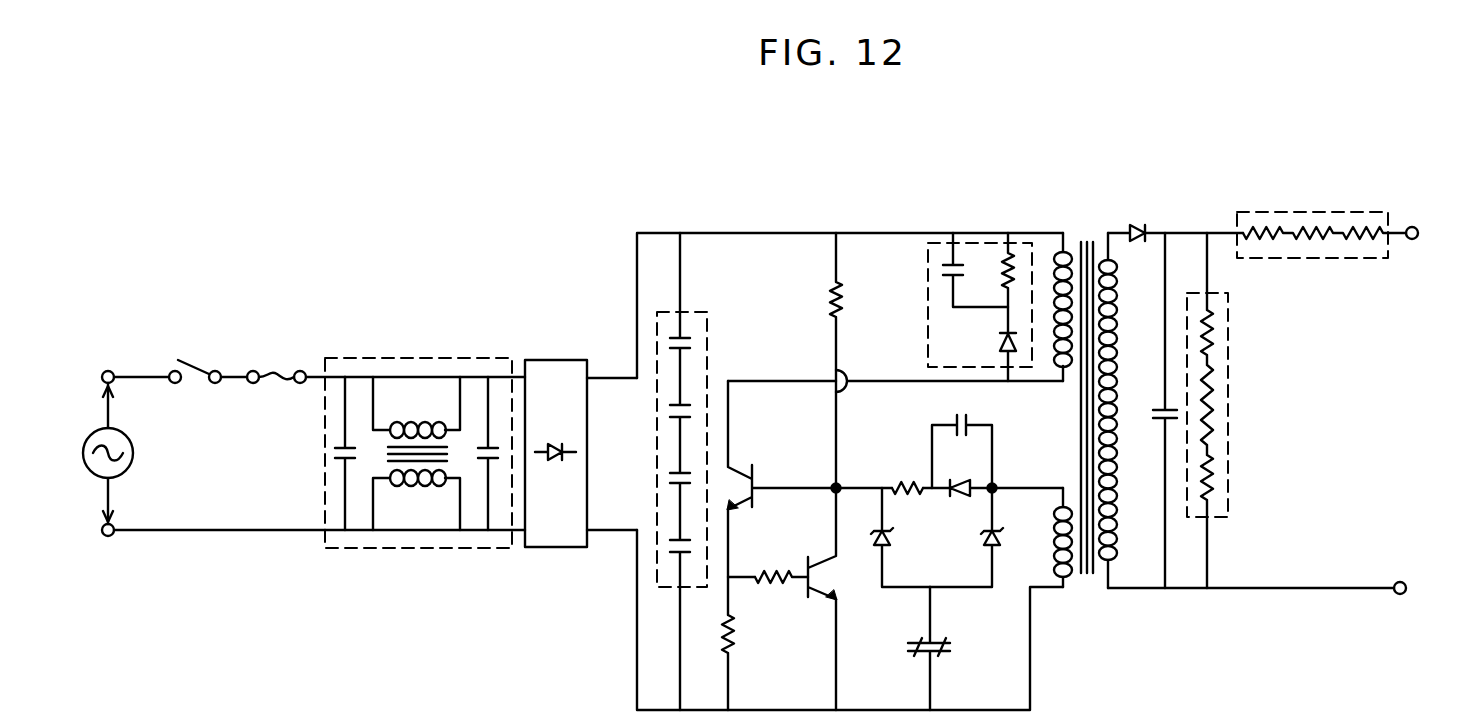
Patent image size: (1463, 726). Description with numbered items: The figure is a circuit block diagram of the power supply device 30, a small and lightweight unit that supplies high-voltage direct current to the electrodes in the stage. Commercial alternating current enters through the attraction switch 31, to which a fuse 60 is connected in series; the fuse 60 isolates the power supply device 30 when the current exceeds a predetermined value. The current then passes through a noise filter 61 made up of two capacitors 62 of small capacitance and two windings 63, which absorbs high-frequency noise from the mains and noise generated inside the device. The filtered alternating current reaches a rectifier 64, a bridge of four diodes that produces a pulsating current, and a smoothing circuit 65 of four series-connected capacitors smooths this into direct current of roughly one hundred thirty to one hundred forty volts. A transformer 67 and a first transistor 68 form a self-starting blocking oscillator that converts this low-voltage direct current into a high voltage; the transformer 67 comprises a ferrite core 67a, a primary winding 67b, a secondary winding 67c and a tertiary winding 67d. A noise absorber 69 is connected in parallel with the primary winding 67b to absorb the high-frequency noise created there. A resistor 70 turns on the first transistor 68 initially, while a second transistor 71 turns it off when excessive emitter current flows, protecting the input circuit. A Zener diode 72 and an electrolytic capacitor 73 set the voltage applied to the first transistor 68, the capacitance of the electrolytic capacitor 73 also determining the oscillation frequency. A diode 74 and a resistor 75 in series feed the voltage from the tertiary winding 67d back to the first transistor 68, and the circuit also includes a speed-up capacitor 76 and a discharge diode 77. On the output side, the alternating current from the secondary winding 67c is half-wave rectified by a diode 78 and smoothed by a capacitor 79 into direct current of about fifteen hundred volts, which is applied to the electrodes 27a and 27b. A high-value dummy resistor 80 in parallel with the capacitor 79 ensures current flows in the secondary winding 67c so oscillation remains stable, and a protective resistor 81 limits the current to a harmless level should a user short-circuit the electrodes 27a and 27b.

The power supply device 30 is at (682, 188).
The attraction switch 31 is at (198, 372).
The fuse 60 is at (279, 374).
The noise filter 61 is at (391, 472).
The capacitors 62 is at (340, 452).
The windings 63 is at (429, 423).
The rectifier 64 is at (557, 548).
The smoothing circuit 65 is at (655, 343).
The transformer 67 is at (1099, 388).
The core 67a is at (1087, 578).
The primary winding 67b is at (1057, 262).
The secondary winding 67c is at (1115, 572).
The tertiary winding 67d is at (1066, 578).
The first transistor 68 is at (748, 484).
The noise absorber 69 is at (928, 290).
The resistor 70 is at (834, 300).
The second transistor 71 is at (812, 592).
The Zener diode 72 is at (888, 540).
The electrolytic capacitor 73 is at (915, 655).
The diode 74 is at (964, 486).
The resistor 75 is at (893, 488).
The speed-up capacitor 76 is at (952, 418).
The discharge diode 77 is at (995, 542).
The diode 78 is at (1137, 226).
The capacitor 79 is at (1162, 409).
The dummy resistor 80 is at (1228, 410).
The resistor 81 is at (1300, 212).
The electrode 27a is at (1412, 240).
The electrode 27b is at (1400, 595).